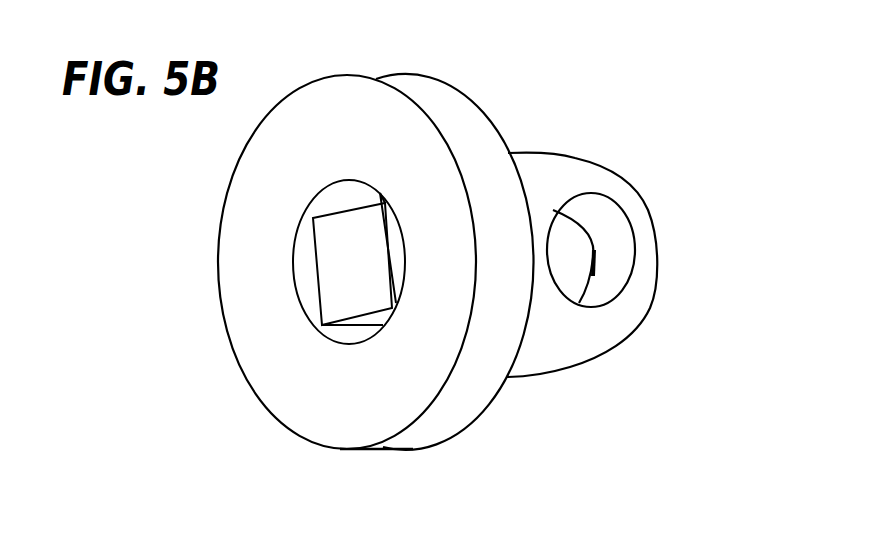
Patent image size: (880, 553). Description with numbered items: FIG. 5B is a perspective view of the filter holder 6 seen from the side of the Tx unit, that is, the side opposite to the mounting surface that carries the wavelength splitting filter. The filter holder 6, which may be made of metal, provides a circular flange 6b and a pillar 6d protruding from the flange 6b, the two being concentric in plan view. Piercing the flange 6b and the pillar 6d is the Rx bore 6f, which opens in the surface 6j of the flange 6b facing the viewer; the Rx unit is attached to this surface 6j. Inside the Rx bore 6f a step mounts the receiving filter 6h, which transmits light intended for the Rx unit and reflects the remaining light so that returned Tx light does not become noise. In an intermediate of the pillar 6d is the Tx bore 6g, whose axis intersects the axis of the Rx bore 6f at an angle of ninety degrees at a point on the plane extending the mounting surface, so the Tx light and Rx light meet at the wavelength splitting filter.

The filter holder 6 is at (663, 124).
The flange 6b is at (397, 443).
The pillar 6d is at (523, 368).
The Rx bore 6f is at (310, 295).
The Tx bore 6g is at (613, 247).
The receiving filter 6h is at (328, 243).
The surface 6j is at (320, 407).